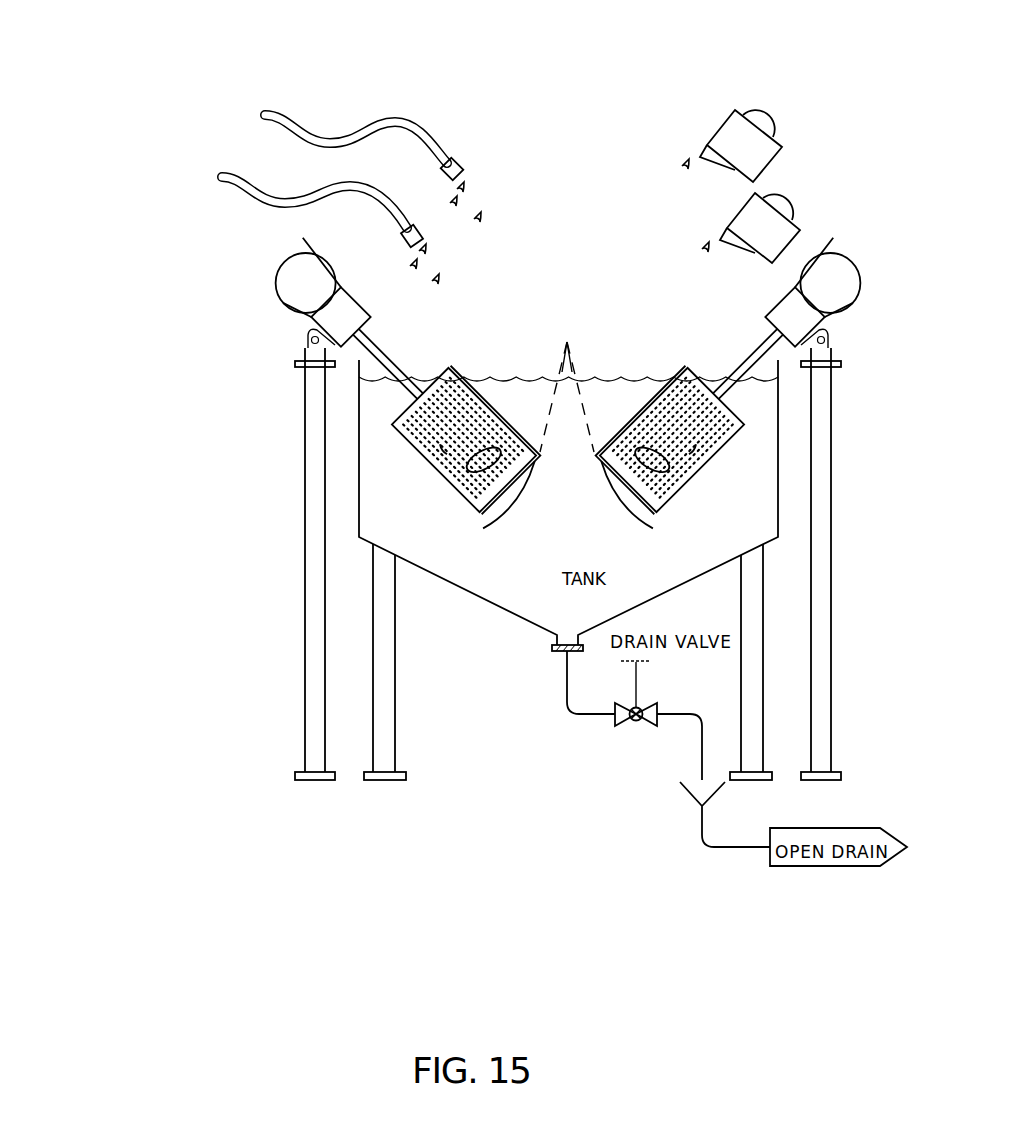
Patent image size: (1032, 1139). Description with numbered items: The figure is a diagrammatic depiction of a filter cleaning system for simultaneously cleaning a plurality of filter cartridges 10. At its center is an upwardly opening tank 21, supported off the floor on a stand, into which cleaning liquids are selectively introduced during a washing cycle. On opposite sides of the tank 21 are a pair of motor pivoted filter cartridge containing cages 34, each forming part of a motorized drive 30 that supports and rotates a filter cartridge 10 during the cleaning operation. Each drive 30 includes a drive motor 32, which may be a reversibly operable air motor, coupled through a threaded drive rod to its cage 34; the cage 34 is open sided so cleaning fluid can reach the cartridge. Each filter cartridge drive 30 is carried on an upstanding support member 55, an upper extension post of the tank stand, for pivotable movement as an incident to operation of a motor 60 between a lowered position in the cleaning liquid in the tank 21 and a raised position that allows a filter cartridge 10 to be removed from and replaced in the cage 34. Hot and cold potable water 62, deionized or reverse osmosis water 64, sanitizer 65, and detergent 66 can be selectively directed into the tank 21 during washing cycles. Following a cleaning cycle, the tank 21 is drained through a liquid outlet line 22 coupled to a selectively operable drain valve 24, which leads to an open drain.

The filter cartridge 10 is at (447, 448).
The tank 21 is at (757, 623).
The liquid outlet line 22 is at (697, 748).
The drain valve 24 is at (640, 705).
The motorized drive 30 is at (396, 351).
The drive motor 32 is at (345, 307).
The filter cartridge cage 34 is at (499, 414).
The upstanding support member 55 is at (832, 390).
The motor 60 is at (282, 270).
The hot and cold potable water 62 is at (145, 172).
The deionized or reverse osmosis water 64 is at (217, 100).
The sanitizer 65 is at (743, 108).
The detergent 66 is at (768, 193).